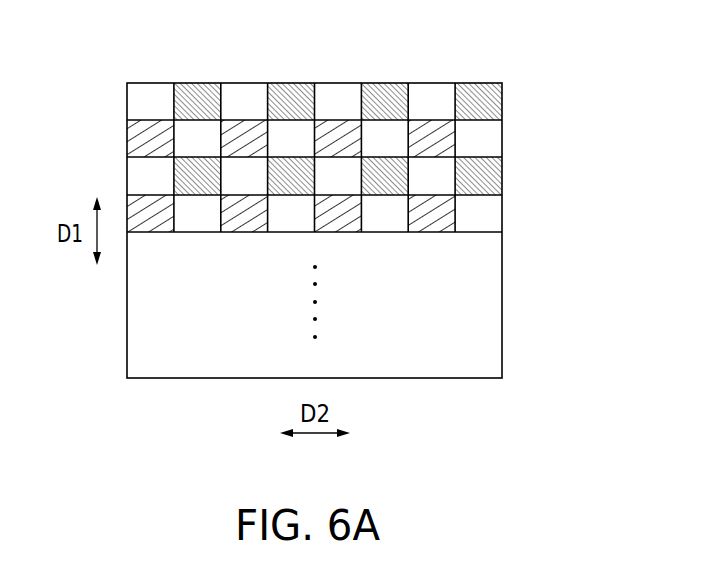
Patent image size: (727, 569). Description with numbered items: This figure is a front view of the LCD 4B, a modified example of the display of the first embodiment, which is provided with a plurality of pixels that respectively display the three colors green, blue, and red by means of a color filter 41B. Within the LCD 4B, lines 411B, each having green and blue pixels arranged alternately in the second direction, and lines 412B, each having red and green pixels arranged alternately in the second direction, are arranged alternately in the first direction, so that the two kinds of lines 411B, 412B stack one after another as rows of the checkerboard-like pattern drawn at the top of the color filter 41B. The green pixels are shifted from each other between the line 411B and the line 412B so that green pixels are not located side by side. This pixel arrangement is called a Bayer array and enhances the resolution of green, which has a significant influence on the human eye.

The LCD 4B is at (322, 189).
The color filter 41B is at (495, 320).
The line 411B is at (514, 100).
The line 412B is at (514, 136).